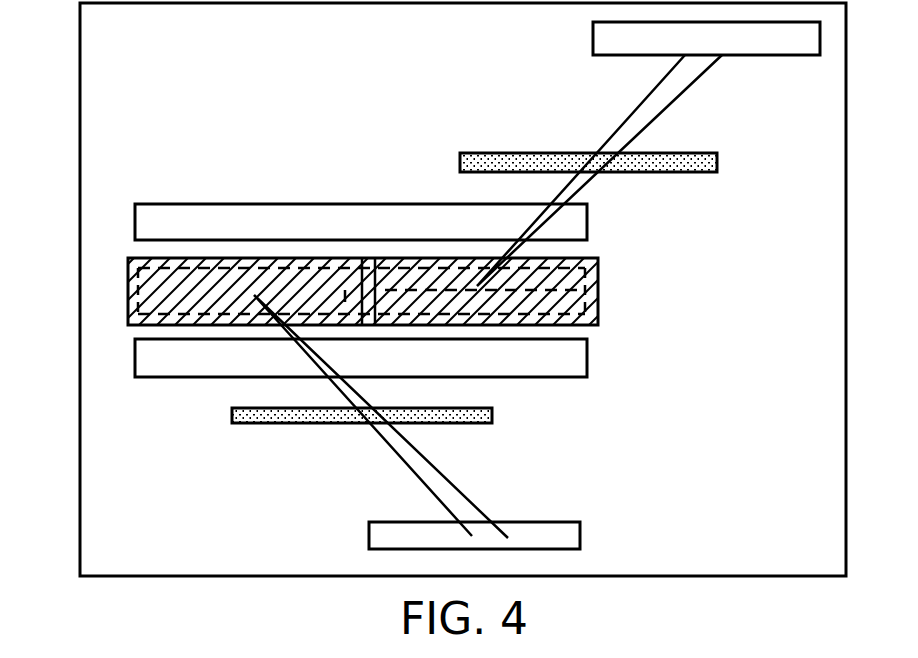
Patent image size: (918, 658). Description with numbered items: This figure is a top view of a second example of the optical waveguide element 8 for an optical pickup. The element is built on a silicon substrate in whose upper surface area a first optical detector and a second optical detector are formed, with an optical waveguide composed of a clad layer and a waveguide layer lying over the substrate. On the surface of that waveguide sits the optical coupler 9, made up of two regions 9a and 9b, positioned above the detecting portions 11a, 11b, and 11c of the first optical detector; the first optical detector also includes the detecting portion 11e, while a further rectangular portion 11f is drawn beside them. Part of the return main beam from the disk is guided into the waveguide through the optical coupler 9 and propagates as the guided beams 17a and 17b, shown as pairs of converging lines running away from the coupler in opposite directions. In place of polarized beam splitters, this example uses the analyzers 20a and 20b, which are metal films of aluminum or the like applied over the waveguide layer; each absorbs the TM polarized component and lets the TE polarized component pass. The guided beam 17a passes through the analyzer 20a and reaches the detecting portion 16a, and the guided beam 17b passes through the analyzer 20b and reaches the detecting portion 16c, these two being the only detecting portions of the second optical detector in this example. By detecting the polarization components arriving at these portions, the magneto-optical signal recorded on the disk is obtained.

The optical waveguide element 8 is at (92, 150).
The detecting portion 16a is at (593, 52).
The guided beam 17a is at (650, 123).
The analyzer 20a is at (717, 171).
The detecting portion 11e is at (235, 217).
The optical coupler 9 is at (598, 318).
The region of optical coupler 9a is at (590, 325).
The region of optical coupler 9b is at (128, 262).
The detecting portion 11c is at (128, 300).
The detecting portion 11b is at (598, 276).
The detecting portion 11a is at (598, 300).
The lower substrate 11f is at (163, 368).
The analyzer 20b is at (492, 416).
The guided beam 17b is at (397, 452).
The detecting portion 16c is at (580, 522).